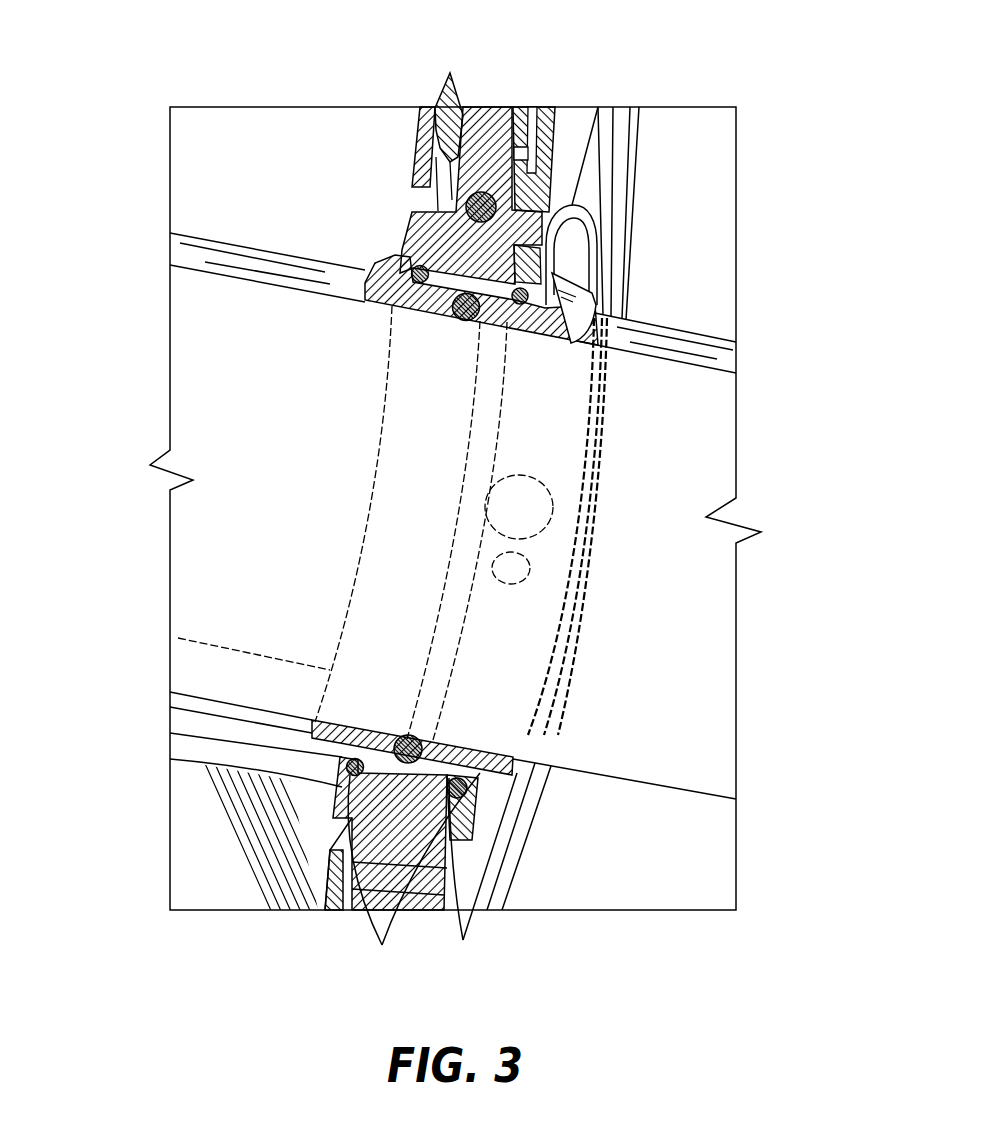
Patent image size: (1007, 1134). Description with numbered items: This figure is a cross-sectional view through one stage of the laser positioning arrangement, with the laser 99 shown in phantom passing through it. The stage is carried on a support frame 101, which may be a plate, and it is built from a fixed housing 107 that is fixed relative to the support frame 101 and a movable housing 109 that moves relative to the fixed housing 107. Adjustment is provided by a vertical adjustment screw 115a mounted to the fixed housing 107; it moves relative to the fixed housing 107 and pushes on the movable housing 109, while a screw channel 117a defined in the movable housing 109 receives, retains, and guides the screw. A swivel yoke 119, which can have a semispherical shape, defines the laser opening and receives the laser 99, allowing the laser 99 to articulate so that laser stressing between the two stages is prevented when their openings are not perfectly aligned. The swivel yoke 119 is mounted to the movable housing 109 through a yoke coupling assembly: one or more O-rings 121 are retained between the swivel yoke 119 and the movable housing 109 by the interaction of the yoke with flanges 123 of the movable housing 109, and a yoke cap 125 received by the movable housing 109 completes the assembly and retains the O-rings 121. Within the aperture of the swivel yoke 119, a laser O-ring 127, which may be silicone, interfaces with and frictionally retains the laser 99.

The laser 99 is at (688, 492).
The support frame 101 is at (213, 818).
The fixed housing 107 is at (528, 140).
The movable housing 109 is at (477, 253).
The vertical adjustment screw 115a is at (485, 130).
The screw channel 117a is at (438, 150).
The swivel yoke 119 is at (358, 260).
The O-ring 121 is at (382, 945).
The flange 123 is at (348, 765).
The yoke cap 125 is at (483, 770).
The laser O-ring 127 is at (406, 736).